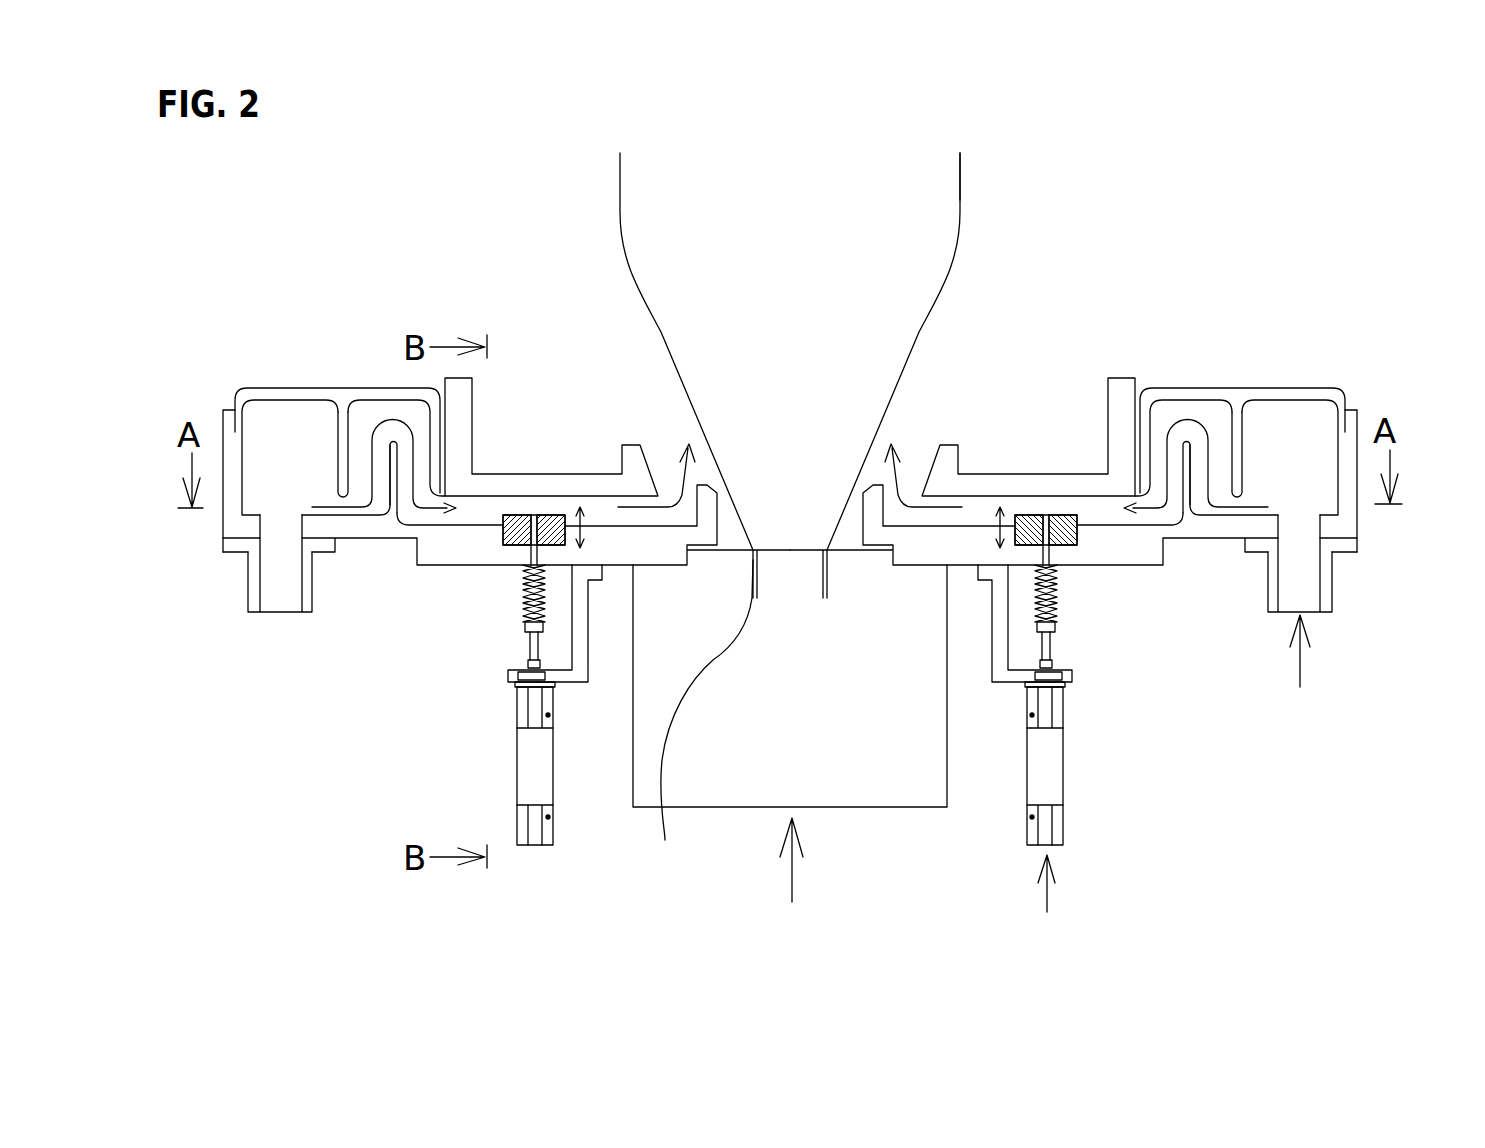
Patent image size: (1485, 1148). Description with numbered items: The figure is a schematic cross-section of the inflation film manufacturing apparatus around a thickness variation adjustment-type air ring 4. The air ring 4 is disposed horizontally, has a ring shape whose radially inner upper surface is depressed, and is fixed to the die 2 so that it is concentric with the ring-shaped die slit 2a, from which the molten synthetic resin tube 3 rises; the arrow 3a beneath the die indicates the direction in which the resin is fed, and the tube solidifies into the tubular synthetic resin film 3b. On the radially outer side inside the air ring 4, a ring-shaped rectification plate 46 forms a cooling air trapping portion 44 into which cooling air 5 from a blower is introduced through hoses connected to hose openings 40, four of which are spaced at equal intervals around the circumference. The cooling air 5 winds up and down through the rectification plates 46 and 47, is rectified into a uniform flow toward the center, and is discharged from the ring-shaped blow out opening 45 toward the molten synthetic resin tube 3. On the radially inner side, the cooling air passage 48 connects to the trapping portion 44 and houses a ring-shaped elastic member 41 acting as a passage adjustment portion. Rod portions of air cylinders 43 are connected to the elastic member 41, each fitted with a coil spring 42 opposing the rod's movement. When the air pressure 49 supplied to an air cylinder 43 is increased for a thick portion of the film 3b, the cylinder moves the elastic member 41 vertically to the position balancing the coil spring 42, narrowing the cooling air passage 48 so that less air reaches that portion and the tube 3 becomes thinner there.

The die 2 is at (912, 798).
The die slit 2a is at (696, 724).
The molten synthetic resin tube 3 is at (852, 415).
The fuel gas flow 3a is at (778, 860).
The tubular synthetic resin film 3b is at (929, 188).
The air ring 4 is at (1314, 364).
The cooling air 5 is at (1302, 676).
The hose opening 40 is at (1325, 592).
The elastic member 41 is at (1068, 540).
The coil spring 42 is at (1053, 602).
The air cylinder 43 is at (1053, 780).
The cooling air trapping portion 44 is at (1283, 470).
The blow out opening 45 is at (663, 490).
The rectification plate 46 is at (1237, 467).
The rectification plate 47 is at (1188, 470).
The cooling air passage 48 is at (1047, 512).
The air pressure 49 is at (1071, 885).